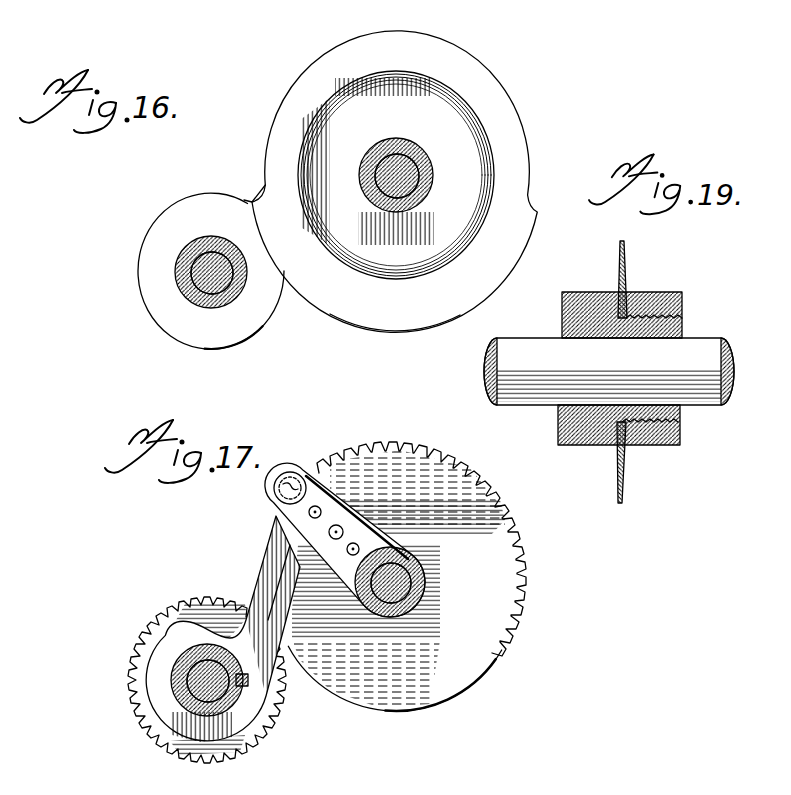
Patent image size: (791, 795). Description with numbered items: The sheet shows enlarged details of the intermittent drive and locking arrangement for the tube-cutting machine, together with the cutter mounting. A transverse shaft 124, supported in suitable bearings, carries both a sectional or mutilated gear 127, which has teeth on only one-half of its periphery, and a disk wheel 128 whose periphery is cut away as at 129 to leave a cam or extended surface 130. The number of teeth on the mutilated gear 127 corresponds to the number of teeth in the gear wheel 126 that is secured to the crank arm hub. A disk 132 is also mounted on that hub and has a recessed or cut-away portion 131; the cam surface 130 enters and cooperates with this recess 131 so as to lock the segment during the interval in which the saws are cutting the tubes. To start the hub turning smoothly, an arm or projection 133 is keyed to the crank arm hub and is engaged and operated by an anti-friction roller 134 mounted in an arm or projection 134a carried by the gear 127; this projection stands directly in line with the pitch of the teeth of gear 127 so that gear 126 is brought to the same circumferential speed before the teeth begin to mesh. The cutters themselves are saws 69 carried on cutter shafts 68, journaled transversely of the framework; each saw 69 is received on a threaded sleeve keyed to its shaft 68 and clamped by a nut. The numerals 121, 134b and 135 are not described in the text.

In FIG. 19, the cutter shaft 68 is at (512, 350).
In FIG. 19, the saw 69 is at (628, 270).
In FIG. 16, the shaft hub 121 is at (205, 278).
In FIG. 17, the shaft hub 121 is at (195, 675).
In FIG. 16, the transverse shaft 124 is at (412, 163).
In FIG. 17, the transverse shaft 124 is at (403, 582).
In FIG. 17, the gear wheel 126 is at (140, 650).
In FIG. 17, the mutilated gear 127 is at (400, 445).
In FIG. 16, the disk wheel 128 is at (472, 183).
In FIG. 19, the disk wheel 128 is at (580, 300).
In FIG. 16, the cut-away portion 129 is at (447, 50).
In FIG. 19, the cut-away portion 129 is at (673, 340).
In FIG. 16, the cam surface 130 is at (398, 307).
In FIG. 19, the cam surface 130 is at (667, 307).
In FIG. 16, the recessed portion 131 is at (246, 200).
In FIG. 16, the disk 132 is at (182, 213).
In FIG. 17, the arm 133 is at (273, 625).
In FIG. 17, the anti-friction roller 134 is at (290, 478).
In FIG. 17, the arm 134a is at (353, 532).
In FIG. 17, the lever portion 134b is at (320, 791).
In FIG. 17, the spring 135 is at (123, 791).